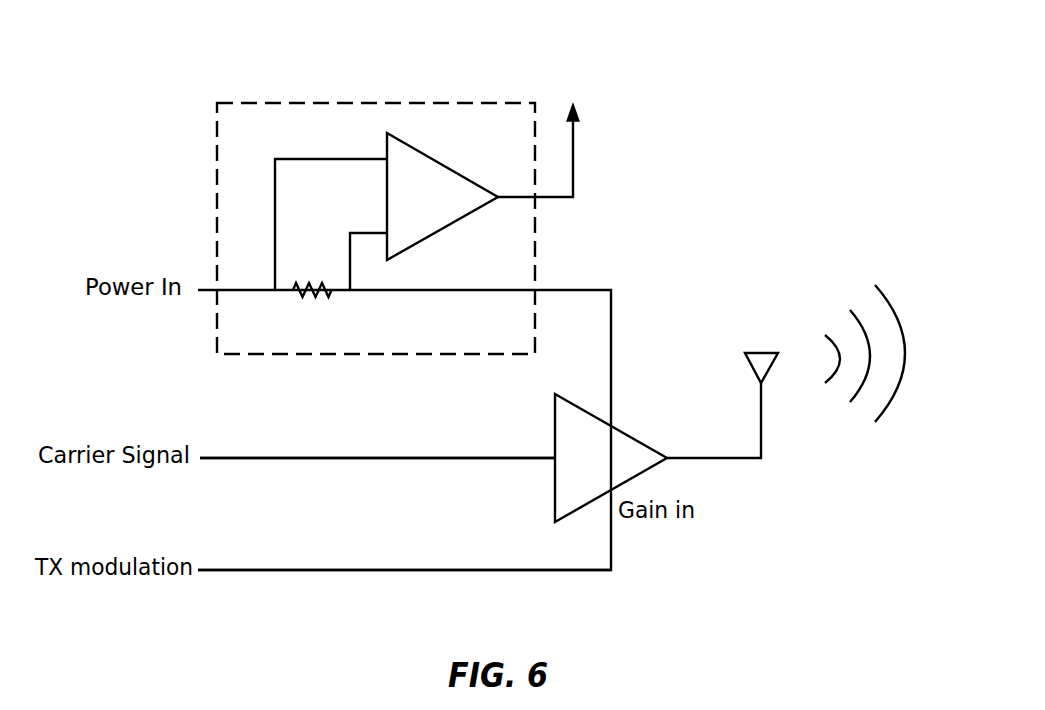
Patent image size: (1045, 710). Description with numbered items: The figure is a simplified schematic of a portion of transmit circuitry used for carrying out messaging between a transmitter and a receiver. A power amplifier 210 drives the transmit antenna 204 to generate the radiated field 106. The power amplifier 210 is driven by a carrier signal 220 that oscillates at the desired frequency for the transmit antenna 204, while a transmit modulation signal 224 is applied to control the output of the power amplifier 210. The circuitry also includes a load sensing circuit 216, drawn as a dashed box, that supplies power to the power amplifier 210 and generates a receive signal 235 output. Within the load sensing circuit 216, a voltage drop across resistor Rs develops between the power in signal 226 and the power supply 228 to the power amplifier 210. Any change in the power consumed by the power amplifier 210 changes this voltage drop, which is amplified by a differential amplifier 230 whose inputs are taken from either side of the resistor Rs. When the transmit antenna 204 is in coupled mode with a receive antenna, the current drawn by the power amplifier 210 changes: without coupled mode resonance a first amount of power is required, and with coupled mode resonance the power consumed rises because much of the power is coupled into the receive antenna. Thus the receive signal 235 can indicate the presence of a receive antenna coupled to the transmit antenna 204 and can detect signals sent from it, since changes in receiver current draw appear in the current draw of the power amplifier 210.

The radiated field 106 is at (857, 274).
The transmit antenna 204 is at (748, 359).
The power amplifier 210 is at (632, 432).
The load sensing circuit 216 is at (346, 103).
The carrier signal 220 is at (258, 458).
The transmit modulation signal 224 is at (283, 570).
The power in signal 226 is at (264, 293).
The power supply 228 is at (404, 293).
The differential amplifier 230 is at (458, 222).
The receive signal 235 is at (573, 158).
The resistor Rs is at (312, 308).